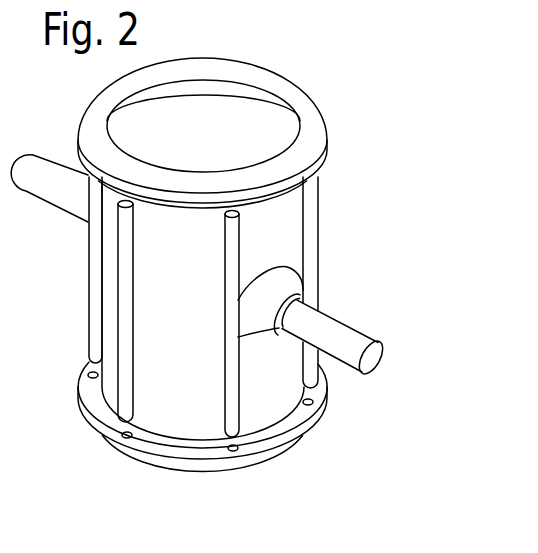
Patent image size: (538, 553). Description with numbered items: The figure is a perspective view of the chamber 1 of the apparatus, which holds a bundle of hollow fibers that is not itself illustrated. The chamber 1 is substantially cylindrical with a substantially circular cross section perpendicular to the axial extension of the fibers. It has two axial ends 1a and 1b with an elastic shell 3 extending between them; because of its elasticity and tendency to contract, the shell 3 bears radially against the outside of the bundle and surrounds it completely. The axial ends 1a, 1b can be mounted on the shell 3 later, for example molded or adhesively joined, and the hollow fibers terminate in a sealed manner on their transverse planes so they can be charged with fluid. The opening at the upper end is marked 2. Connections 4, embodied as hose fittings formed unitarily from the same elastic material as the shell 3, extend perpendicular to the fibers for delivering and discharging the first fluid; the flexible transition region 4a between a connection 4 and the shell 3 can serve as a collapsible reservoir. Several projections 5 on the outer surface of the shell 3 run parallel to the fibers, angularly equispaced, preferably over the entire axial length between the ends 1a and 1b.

The chamber 1 is at (341, 165).
The axial end 1a is at (260, 78).
The axial end 1b is at (258, 462).
The opening 2 is at (218, 133).
The elastic shell 3 is at (190, 347).
The connection 4 is at (43, 187).
The flexible transition region 4a is at (282, 290).
The projection 5 is at (226, 243).